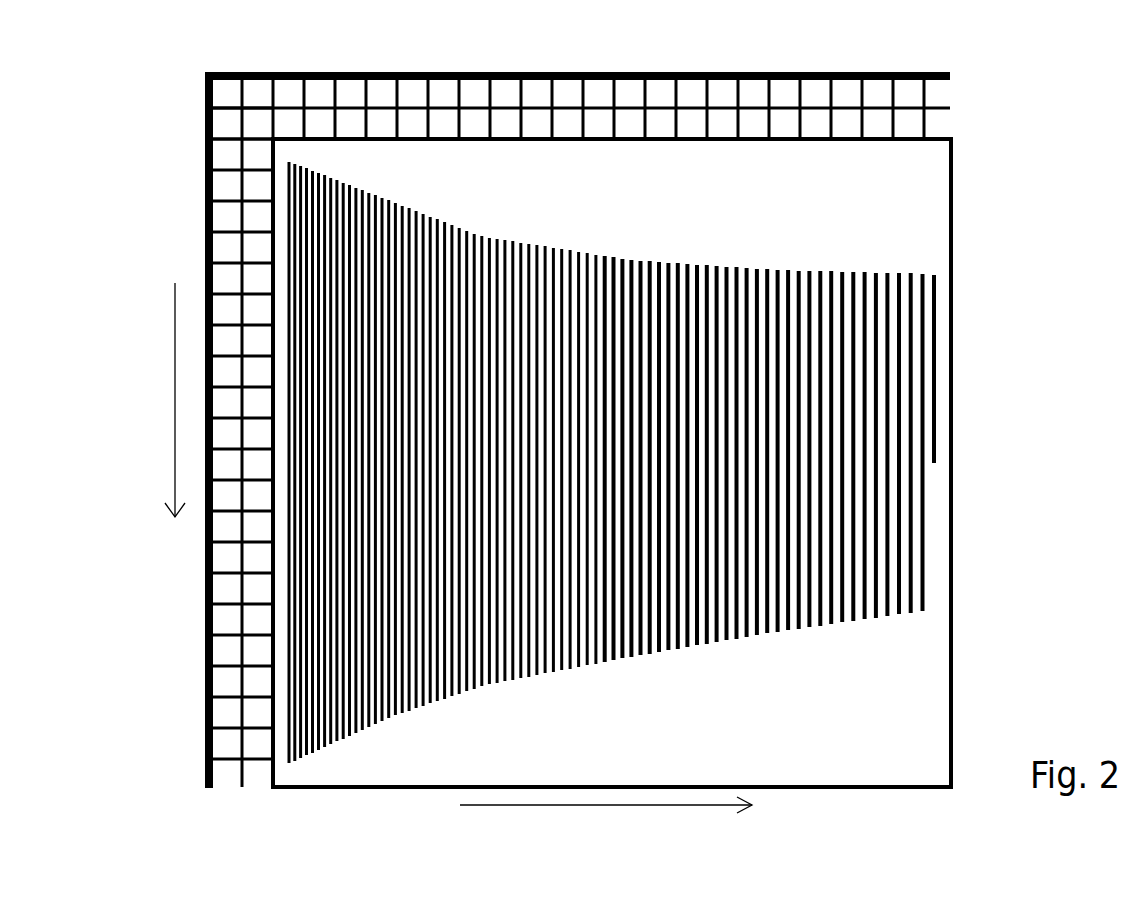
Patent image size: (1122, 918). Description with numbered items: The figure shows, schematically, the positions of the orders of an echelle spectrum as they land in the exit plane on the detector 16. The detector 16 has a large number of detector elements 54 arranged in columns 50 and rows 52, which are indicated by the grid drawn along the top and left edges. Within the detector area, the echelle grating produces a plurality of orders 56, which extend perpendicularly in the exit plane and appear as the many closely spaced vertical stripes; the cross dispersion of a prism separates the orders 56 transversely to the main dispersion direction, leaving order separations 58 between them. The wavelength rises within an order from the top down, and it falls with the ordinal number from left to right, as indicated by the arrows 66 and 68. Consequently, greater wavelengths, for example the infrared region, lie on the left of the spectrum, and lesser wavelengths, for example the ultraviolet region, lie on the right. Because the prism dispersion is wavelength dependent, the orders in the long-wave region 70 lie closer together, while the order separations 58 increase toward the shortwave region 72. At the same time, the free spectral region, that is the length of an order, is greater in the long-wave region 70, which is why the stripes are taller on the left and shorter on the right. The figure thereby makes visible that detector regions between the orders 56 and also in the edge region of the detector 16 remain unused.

The detector 16 is at (885, 788).
The columns 50 is at (225, 60).
The rows 52 is at (193, 96).
The detector elements 54 is at (318, 98).
The orders 56 is at (608, 400).
The order separations 58 is at (917, 323).
The arrow 66 is at (173, 466).
The arrow 68 is at (690, 806).
The long-wave region 70 is at (320, 702).
The shortwave region 72 is at (912, 567).